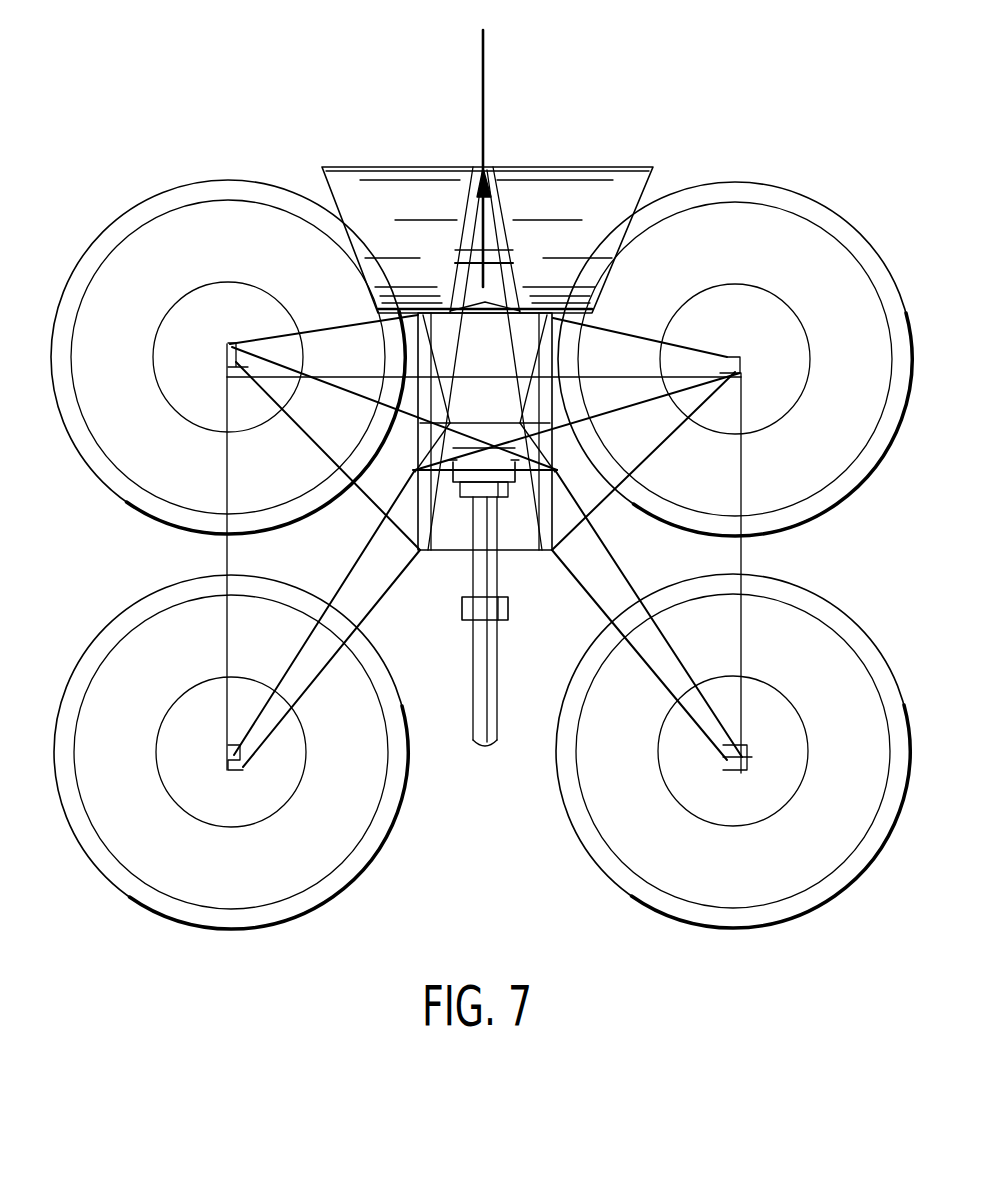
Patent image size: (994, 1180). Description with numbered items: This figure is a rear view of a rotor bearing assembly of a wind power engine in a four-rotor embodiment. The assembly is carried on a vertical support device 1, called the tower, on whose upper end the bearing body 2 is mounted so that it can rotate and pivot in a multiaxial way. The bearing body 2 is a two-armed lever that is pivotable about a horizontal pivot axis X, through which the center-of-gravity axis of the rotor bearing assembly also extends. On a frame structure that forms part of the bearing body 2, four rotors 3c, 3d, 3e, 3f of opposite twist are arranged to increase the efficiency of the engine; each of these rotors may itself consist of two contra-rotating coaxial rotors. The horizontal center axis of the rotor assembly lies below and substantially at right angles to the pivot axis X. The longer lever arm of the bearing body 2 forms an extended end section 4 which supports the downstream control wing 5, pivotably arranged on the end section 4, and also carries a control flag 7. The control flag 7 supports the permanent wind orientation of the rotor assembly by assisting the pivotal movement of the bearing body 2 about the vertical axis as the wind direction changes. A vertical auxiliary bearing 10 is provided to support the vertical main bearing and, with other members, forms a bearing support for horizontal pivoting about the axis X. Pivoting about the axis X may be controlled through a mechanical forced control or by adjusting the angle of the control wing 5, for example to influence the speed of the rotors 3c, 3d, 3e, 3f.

The vertical support device 1 is at (490, 713).
The bearing body 2 is at (445, 555).
The rotor 3c is at (181, 193).
The rotor 3d is at (783, 195).
The rotor 3e is at (820, 607).
The rotor 3f is at (108, 617).
The end section 4 is at (447, 307).
The control wing 5 is at (565, 175).
The control flag 7 is at (485, 53).
The vertical auxiliary bearing 10 is at (462, 613).
The horizontal pivot axis X is at (550, 470).